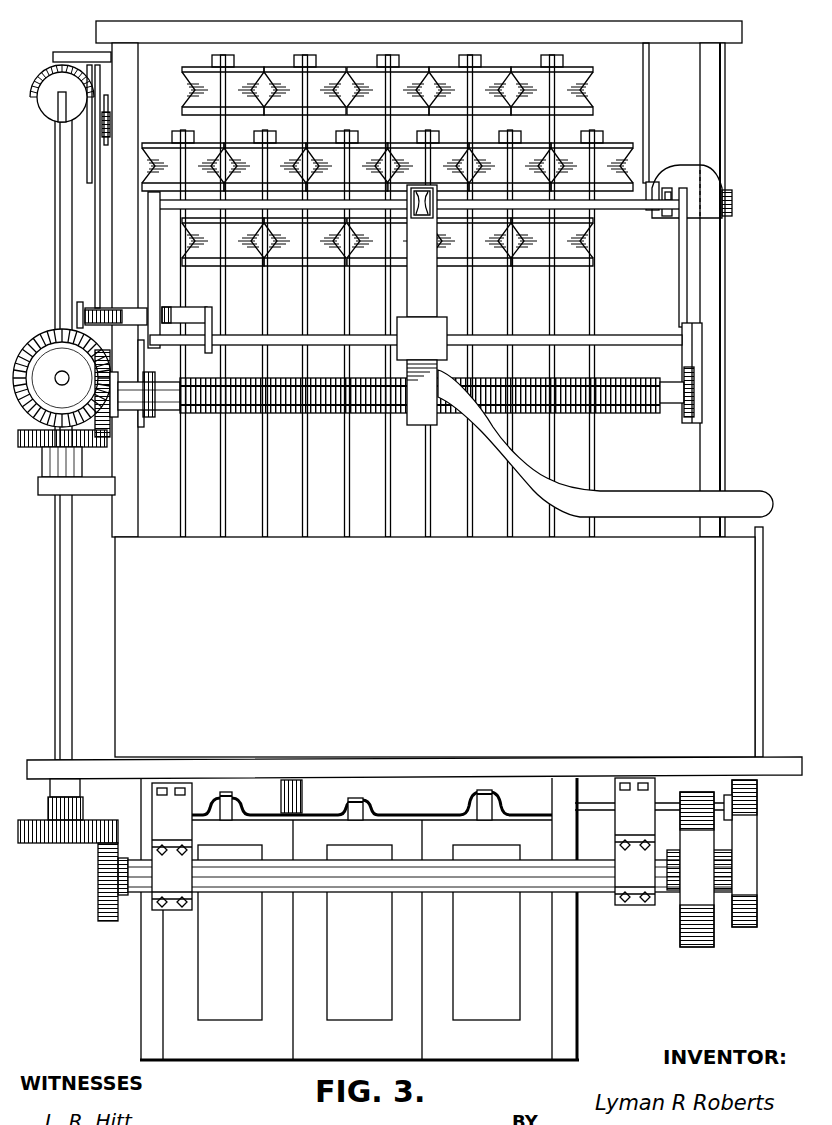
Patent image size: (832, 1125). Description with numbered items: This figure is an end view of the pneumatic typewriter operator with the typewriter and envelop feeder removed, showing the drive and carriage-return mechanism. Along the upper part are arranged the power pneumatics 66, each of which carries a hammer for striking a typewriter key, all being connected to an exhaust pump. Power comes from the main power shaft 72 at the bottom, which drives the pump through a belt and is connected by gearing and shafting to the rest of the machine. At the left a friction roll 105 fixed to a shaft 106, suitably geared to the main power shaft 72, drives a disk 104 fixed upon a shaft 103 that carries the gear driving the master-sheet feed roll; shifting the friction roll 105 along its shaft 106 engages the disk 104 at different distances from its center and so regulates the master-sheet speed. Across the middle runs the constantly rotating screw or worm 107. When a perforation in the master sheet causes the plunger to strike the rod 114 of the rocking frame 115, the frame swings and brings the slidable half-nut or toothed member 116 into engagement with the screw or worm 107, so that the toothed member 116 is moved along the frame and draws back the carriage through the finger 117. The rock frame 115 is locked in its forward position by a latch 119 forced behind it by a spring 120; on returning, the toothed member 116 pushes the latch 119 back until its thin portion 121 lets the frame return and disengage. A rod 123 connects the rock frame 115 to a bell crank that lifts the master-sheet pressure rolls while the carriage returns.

The power pneumatic 66 is at (607, 145).
The main power shaft 72 is at (138, 880).
The shaft 103 is at (110, 128).
The disk 104 is at (88, 147).
The friction roll 105 is at (45, 100).
The shaft 106 is at (55, 233).
The screw or worm 107 is at (596, 383).
The rod 114 is at (633, 210).
The rocking frame 115 is at (157, 298).
The half-nut or toothed member 116 is at (422, 305).
The finger 117 is at (605, 443).
The latch 119 is at (128, 318).
The spring 120 is at (107, 312).
The thin portion 121 is at (187, 330).
The rod 123 is at (650, 90).